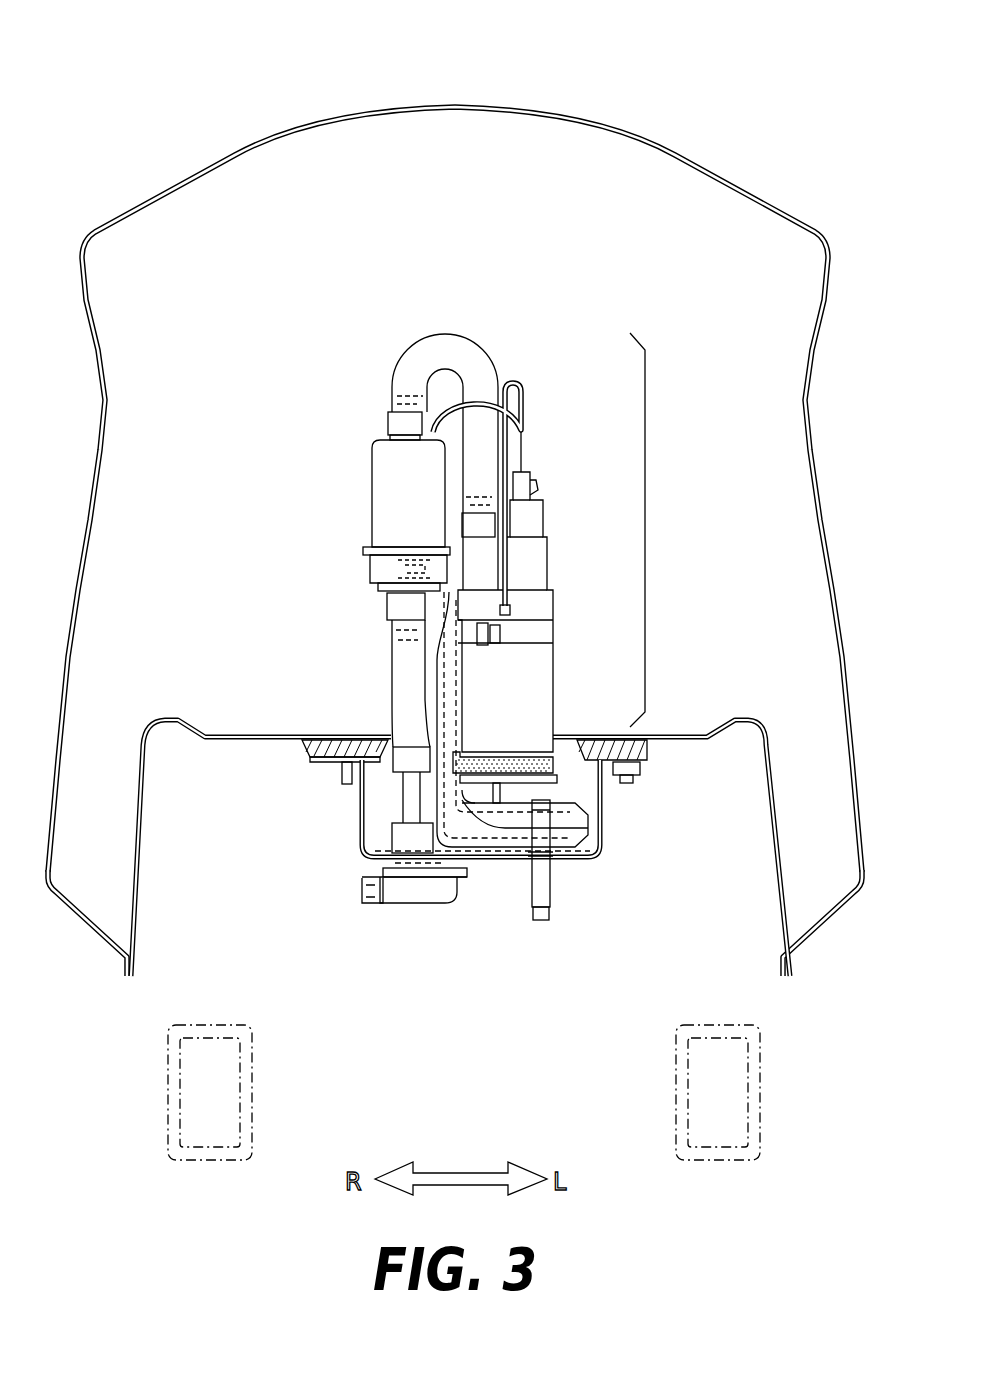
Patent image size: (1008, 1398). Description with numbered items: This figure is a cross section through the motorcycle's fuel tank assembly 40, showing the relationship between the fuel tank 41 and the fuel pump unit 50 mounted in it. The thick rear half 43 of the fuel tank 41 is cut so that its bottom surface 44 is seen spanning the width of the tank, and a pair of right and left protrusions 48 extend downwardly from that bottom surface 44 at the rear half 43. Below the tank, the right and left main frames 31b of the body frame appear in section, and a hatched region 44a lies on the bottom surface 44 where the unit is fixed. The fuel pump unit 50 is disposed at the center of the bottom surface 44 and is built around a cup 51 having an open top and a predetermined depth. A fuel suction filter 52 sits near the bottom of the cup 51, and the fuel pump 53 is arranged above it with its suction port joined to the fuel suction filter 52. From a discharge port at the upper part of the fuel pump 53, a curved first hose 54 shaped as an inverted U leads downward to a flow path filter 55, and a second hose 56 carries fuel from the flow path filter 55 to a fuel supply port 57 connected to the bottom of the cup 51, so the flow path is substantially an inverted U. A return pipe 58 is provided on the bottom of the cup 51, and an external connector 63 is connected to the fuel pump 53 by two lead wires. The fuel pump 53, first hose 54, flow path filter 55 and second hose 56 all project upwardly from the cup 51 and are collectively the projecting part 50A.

The main frame 31b is at (168, 1077).
The fuel tank assembly 40 is at (484, 437).
The fuel tank 41 is at (455, 437).
The rear half 43 is at (452, 100).
The bottom surface 44 is at (258, 740).
The mounting boss 44a is at (390, 736).
The protrusion 48 is at (95, 887).
The fuel pump unit 50 is at (483, 625).
The projecting part 50A is at (645, 530).
The cup 51 is at (577, 858).
The fuel suction filter 52 is at (580, 833).
The fuel pump 53 is at (545, 683).
The first hose 54 is at (405, 367).
The flow path filter 55 is at (383, 498).
The second hose 56 is at (400, 652).
The fuel supply port 57 is at (407, 838).
The return pipe 58 is at (545, 922).
The external connector 63 is at (367, 890).